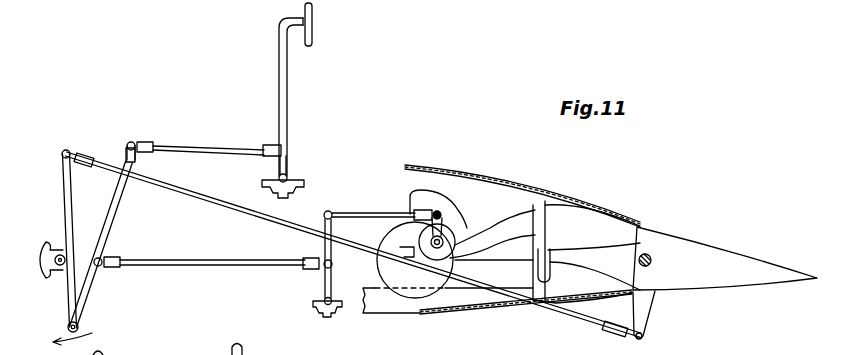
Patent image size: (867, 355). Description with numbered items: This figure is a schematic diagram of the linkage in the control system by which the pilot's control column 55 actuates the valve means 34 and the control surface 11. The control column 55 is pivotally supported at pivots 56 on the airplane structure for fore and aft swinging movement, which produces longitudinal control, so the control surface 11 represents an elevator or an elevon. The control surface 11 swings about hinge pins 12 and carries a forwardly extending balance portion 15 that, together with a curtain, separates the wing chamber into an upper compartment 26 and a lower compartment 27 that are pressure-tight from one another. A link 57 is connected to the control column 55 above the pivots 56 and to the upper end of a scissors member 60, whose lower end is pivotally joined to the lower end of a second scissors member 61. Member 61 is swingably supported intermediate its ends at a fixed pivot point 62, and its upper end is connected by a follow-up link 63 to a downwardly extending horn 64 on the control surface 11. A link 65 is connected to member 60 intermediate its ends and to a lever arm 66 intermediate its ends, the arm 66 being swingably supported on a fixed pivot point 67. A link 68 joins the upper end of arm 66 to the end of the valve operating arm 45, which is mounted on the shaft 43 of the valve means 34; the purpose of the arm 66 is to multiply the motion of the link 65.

The control surface 11 is at (706, 250).
The hinge pins 12 is at (652, 261).
The balance portion 15 is at (615, 238).
The upper compartment 26 is at (577, 219).
The lower compartment 27 is at (571, 296).
The valve means 34 is at (479, 229).
The shaft 43 is at (460, 296).
The valve operating arm 45 is at (456, 224).
The control column 55 is at (283, 110).
The pivots 56 is at (287, 178).
The link 57 is at (200, 150).
The scissors member 60 is at (118, 212).
The second scissors member 61 is at (71, 316).
The fixed pivot point 62 is at (66, 258).
The follow-up link 63 is at (211, 205).
The horn 64 is at (652, 311).
The link 65 is at (178, 268).
The lever arm 66 is at (320, 258).
The fixed pivot point 67 is at (321, 298).
The link 68 is at (360, 213).